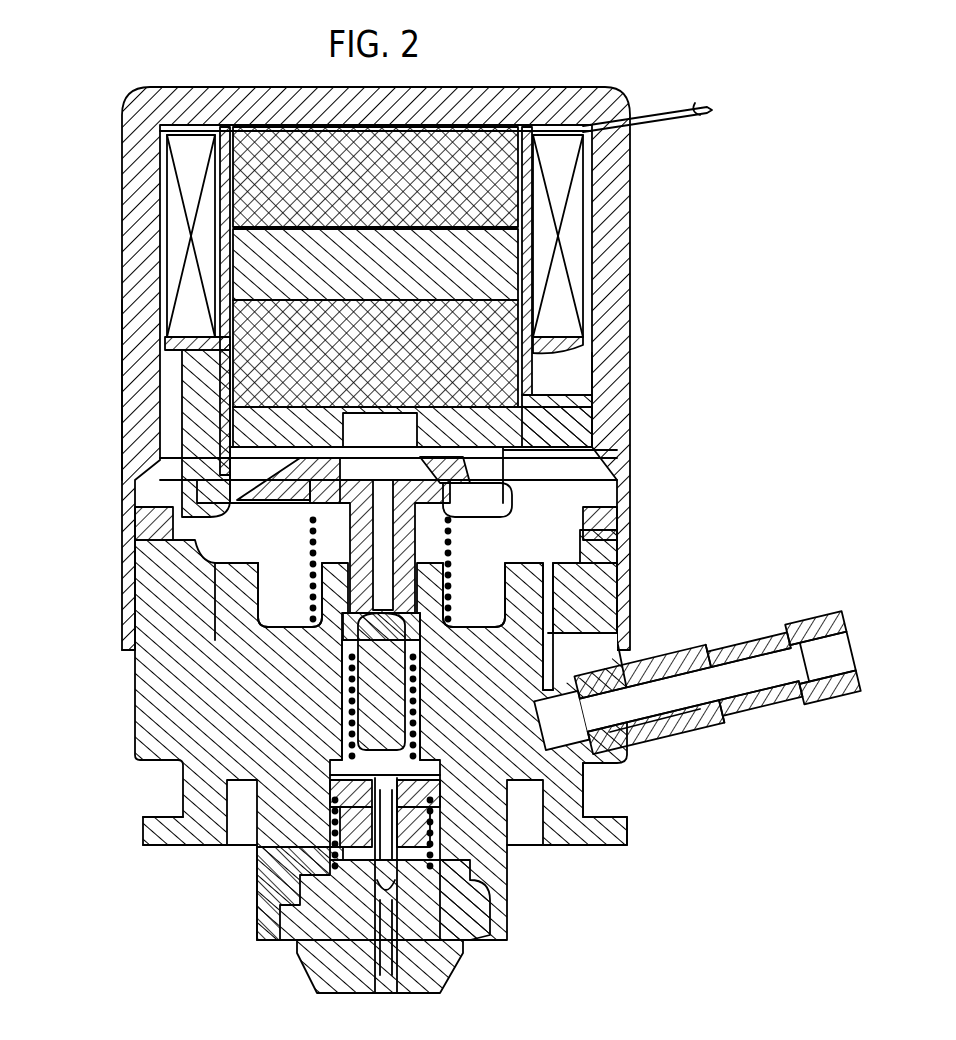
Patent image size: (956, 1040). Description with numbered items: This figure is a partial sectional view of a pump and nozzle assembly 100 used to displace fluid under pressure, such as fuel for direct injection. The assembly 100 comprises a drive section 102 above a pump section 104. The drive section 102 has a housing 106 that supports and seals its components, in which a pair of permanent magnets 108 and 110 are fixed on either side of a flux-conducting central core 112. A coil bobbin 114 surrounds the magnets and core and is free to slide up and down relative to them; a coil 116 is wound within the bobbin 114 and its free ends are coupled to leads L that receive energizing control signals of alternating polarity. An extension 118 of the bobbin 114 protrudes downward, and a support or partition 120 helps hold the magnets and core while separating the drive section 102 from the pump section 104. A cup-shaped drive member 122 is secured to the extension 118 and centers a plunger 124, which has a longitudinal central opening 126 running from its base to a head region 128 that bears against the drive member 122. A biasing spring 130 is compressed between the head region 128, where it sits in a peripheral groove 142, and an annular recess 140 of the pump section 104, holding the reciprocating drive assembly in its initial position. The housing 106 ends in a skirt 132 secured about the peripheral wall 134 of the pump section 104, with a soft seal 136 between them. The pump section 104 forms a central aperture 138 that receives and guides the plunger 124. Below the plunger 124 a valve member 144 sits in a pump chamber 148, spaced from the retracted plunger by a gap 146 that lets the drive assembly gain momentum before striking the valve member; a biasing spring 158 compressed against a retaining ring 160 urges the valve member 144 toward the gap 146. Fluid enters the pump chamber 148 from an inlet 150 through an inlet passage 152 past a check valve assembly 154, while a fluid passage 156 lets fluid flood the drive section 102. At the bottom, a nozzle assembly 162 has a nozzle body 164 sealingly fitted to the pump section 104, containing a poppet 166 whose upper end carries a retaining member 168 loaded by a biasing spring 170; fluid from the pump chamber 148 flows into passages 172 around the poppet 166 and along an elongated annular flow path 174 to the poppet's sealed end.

The pump and nozzle assembly 100 is at (110, 942).
The drive section 102 is at (112, 400).
The pump section 104 is at (118, 720).
The housing 106 is at (122, 262).
The permanent magnet 108 is at (543, 160).
The leads L is at (692, 96).
The permanent magnet 110 is at (497, 377).
The central core 112 is at (505, 245).
The coil bobbin 114 is at (565, 332).
The coil 116 is at (585, 277).
The extension 118 is at (178, 442).
The support or partition 120 is at (580, 415).
The drive member 122 is at (185, 495).
The plunger 124 is at (355, 527).
The longitudinal central opening 126 is at (340, 507).
The head region 128 is at (463, 493).
The biasing spring 130 is at (452, 552).
The skirt 132 is at (627, 615).
The peripheral wall 134 is at (610, 587).
The soft seal 136 is at (600, 517).
The central aperture 138 is at (343, 580).
The annular recess 140 is at (272, 607).
The peripheral groove 142 is at (455, 512).
The valve member 144 is at (345, 648).
The gap 146 is at (446, 603).
The pump chamber 148 is at (375, 765).
The inlet 150 is at (735, 705).
The inlet passage 152 is at (673, 732).
The check valve assembly 154 is at (598, 787).
The fluid passage 156 is at (550, 662).
The biasing spring 158 is at (340, 710).
The retaining ring 160 is at (432, 778).
The nozzle assembly 162 is at (470, 978).
The nozzle body 164 is at (447, 923).
The poppet 166 is at (442, 993).
The retaining member 168 is at (337, 800).
The biasing spring 170 is at (343, 833).
The passages 172 is at (500, 873).
The elongated annular flow path 174 is at (377, 885).